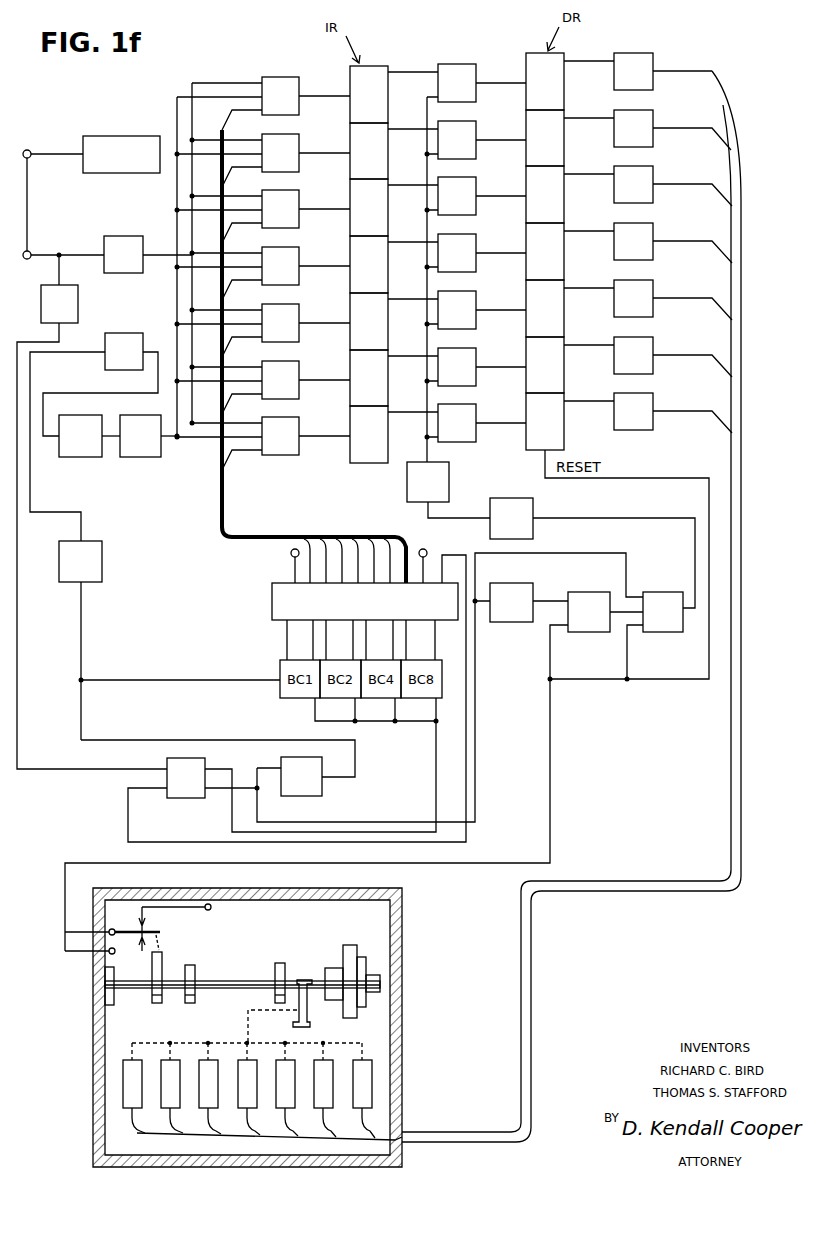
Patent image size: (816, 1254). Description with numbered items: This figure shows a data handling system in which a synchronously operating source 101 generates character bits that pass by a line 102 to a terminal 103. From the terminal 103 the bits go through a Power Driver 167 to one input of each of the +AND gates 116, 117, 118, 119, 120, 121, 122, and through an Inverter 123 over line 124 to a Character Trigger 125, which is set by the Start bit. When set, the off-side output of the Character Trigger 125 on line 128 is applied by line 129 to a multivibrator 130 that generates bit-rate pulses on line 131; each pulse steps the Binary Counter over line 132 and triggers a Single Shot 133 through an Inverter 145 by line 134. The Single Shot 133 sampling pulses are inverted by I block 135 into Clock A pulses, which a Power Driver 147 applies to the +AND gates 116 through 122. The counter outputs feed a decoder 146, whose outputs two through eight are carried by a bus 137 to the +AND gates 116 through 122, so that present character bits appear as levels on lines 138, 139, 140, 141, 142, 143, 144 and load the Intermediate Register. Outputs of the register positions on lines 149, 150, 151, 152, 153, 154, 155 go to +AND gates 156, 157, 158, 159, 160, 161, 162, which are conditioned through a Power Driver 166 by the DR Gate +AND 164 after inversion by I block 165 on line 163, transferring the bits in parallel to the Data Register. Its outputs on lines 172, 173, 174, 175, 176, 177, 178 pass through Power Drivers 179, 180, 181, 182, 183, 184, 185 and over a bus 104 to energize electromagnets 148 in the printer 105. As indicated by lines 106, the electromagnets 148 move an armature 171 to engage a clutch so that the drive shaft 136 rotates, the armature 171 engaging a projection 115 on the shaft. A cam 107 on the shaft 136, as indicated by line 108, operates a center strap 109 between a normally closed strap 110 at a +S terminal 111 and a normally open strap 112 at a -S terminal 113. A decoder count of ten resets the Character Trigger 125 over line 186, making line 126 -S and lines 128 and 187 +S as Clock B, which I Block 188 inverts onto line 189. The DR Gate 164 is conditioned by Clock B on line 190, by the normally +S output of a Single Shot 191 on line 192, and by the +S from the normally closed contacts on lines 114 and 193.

The source 101 is at (112, 173).
The line 102 is at (28, 197).
The terminal 103 is at (32, 250).
The bus 104 is at (742, 420).
The typewriter or input-output printer 105 is at (402, 935).
The lines 106 is at (240, 1027).
The cam 107 is at (150, 1001).
The line 108 is at (163, 948).
The center strap 109 is at (158, 930).
The normally closed strap 110 is at (81, 942).
The terminal 111 is at (100, 954).
The normally open strap 112 is at (170, 905).
The terminal 113 is at (206, 903).
The line 114 is at (552, 710).
The projection 115 is at (303, 979).
The +AND gate 116 is at (299, 106).
The +AND gate 117 is at (299, 163).
The +AND gate 118 is at (299, 219).
The +AND gate 119 is at (299, 276).
The +AND gate 120 is at (299, 333).
The +AND gate 121 is at (299, 390).
The +AND gate 122 is at (299, 446).
The Inverter 123 is at (78, 306).
The line 124 is at (19, 615).
The Character Trigger 125 is at (180, 798).
The line 126 is at (230, 767).
The line 128 is at (220, 790).
The line 129 is at (260, 775).
The multivibrator 130 is at (322, 786).
The line 131 is at (200, 738).
The line 132 is at (158, 680).
The Single Shot 133 is at (104, 362).
The line 134 is at (82, 530).
The I block 135 is at (75, 458).
The drive shaft 136 is at (245, 979).
The bus 137 is at (225, 488).
The line 138 is at (335, 92).
The line 139 is at (335, 149).
The line 140 is at (335, 205).
The line 141 is at (335, 262).
The line 142 is at (335, 319).
The line 143 is at (335, 376).
The line 144 is at (335, 432).
The Inverter 145 is at (102, 568).
The decoder 146 is at (272, 596).
The Power Driver 147 is at (140, 415).
The electromagnets 148 is at (205, 1058).
The line 149 is at (412, 72).
The line 150 is at (405, 128).
The line 151 is at (405, 184).
The line 152 is at (405, 241).
The line 153 is at (405, 298).
The line 154 is at (405, 355).
The line 155 is at (405, 411).
The +AND gate 156 is at (476, 97).
The +AND gate 157 is at (476, 154).
The +AND gate 158 is at (476, 210).
The +AND gate 159 is at (476, 267).
The +AND gate 160 is at (476, 324).
The +AND gate 161 is at (476, 381).
The +AND gate 162 is at (476, 437).
The line 163 is at (457, 515).
The DR Gate +AND 164 is at (662, 633).
The I block 165 is at (505, 498).
The Power Driver 166 is at (407, 481).
The Power Driver 167 is at (120, 273).
The armature 171 is at (291, 1015).
The line 172 is at (603, 63).
The line 173 is at (603, 120).
The line 174 is at (603, 176).
The line 175 is at (603, 233).
The line 176 is at (603, 290).
The line 177 is at (603, 347).
The line 178 is at (603, 403).
The Power Driver 179 is at (653, 85).
The Power Driver 180 is at (653, 142).
The Power Driver 181 is at (653, 198).
The Power Driver 182 is at (653, 255).
The Power Driver 183 is at (653, 312).
The Power Driver 184 is at (653, 369).
The Power Driver 185 is at (653, 425).
The line 186 is at (128, 808).
The line 187 is at (477, 742).
The I Block 188 is at (512, 623).
The line 189 is at (541, 596).
The line 190 is at (603, 553).
The Single Shot 191 is at (588, 592).
The line 192 is at (617, 617).
The line 193 is at (630, 659).